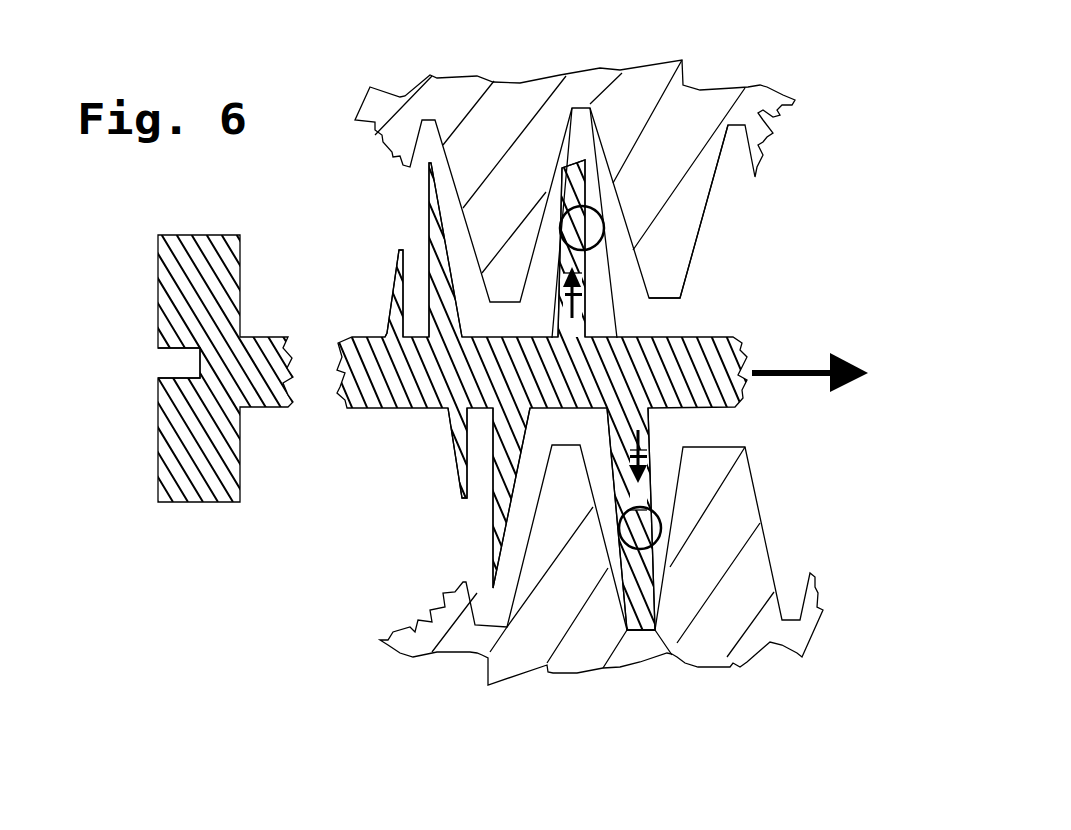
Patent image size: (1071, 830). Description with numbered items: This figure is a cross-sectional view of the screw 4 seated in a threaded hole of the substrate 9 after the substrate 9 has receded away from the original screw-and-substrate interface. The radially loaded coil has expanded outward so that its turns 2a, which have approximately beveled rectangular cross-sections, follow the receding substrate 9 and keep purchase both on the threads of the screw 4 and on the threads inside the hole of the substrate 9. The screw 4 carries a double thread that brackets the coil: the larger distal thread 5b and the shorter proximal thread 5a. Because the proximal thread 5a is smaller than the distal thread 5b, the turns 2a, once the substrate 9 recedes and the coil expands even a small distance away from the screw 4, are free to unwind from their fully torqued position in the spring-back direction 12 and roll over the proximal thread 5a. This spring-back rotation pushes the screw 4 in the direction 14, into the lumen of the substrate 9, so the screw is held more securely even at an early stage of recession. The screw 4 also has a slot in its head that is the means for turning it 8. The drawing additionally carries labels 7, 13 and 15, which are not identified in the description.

The turns of the coil 2a is at (588, 130).
The screw 4 is at (759, 284).
The proximal thread 5a is at (373, 271).
The distal thread 5b is at (407, 231).
The counter element 7 is at (258, 473).
The means for turning the screw 8 is at (142, 379).
The substrate 9 is at (712, 66).
The spring-back direction 12 is at (569, 213).
The displacement arrow 13 is at (664, 445).
The pushing direction of the screw 14 is at (863, 335).
The contact surface 15 is at (701, 318).